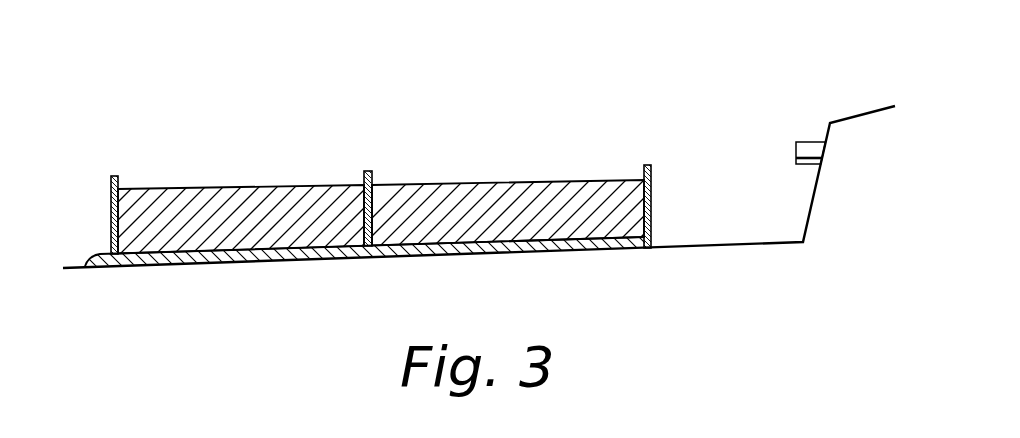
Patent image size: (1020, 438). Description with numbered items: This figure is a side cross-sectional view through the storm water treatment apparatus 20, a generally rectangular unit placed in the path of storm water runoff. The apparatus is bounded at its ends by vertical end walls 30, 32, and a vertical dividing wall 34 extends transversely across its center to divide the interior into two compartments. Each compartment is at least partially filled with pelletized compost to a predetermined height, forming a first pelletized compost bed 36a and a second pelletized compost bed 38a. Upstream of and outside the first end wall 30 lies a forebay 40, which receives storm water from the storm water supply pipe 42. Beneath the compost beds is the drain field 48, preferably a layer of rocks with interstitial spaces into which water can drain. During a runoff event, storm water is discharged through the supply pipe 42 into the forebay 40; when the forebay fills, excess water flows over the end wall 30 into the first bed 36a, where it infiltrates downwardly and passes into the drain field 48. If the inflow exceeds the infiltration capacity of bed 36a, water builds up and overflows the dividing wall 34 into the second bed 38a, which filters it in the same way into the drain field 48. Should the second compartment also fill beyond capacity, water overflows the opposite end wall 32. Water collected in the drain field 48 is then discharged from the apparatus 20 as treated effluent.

The storm water treatment apparatus 20 is at (573, 82).
The first end wall 30 is at (652, 166).
The second end wall 32 is at (111, 201).
The dividing wall 34 is at (364, 178).
The first pelletized compost bed 36a is at (546, 195).
The second pelletized compost bed 38a is at (205, 195).
The forebay 40 is at (712, 210).
The storm water supply pipe 42 is at (810, 146).
The drain field 48 is at (355, 259).